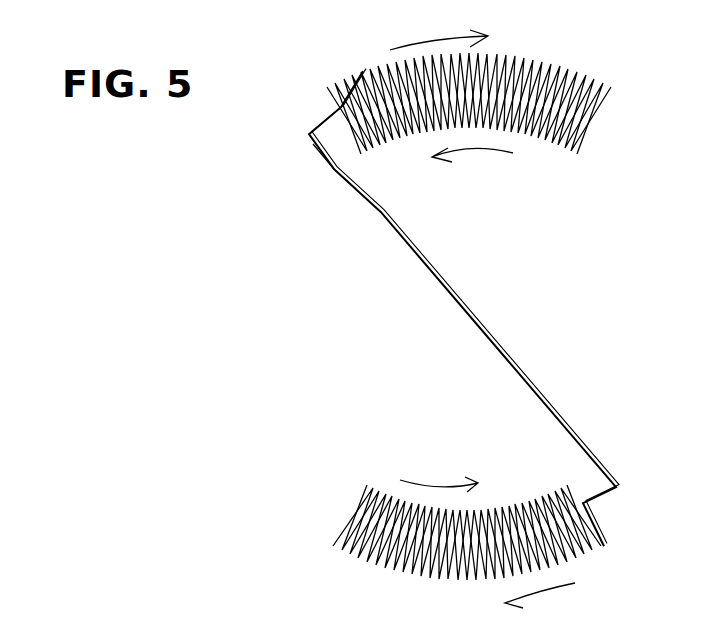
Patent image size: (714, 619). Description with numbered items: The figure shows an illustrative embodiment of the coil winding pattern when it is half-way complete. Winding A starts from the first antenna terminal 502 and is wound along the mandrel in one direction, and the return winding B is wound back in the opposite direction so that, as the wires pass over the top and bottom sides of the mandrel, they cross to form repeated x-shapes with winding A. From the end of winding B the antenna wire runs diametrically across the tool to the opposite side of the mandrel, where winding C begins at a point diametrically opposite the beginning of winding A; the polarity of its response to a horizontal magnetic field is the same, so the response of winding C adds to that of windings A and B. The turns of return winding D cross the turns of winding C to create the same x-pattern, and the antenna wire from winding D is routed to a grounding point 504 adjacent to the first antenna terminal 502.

The first antenna terminal 502 is at (330, 177).
The grounding point 504 is at (340, 182).
The winding A is at (428, 45).
The winding B is at (481, 164).
The winding C is at (557, 587).
The winding D is at (438, 472).